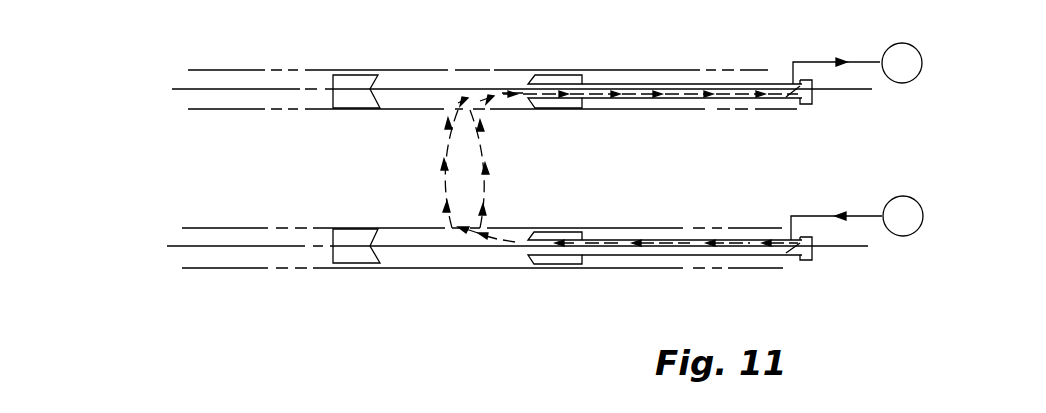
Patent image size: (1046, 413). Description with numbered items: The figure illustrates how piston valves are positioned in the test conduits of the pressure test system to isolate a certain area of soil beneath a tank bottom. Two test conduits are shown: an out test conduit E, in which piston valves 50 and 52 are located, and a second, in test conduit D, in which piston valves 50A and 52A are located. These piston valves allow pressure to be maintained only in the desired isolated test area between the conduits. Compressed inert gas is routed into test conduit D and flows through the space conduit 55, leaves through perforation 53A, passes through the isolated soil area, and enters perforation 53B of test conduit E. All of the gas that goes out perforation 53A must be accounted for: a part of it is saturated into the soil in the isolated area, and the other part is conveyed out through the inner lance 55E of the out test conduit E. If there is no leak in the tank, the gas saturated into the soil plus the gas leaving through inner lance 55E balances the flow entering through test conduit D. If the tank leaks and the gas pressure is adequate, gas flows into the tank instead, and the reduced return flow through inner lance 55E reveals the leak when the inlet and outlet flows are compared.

The piston valve 50 is at (337, 77).
The piston valve 50A is at (355, 258).
The piston valve 52 is at (559, 77).
The piston valve 52A is at (555, 260).
The perforation 53A is at (480, 210).
The perforation 53B is at (460, 115).
The space conduit 55 is at (588, 235).
The inner lance 55E is at (733, 78).
The test conduit E is at (612, 70).
The test conduit D is at (638, 228).